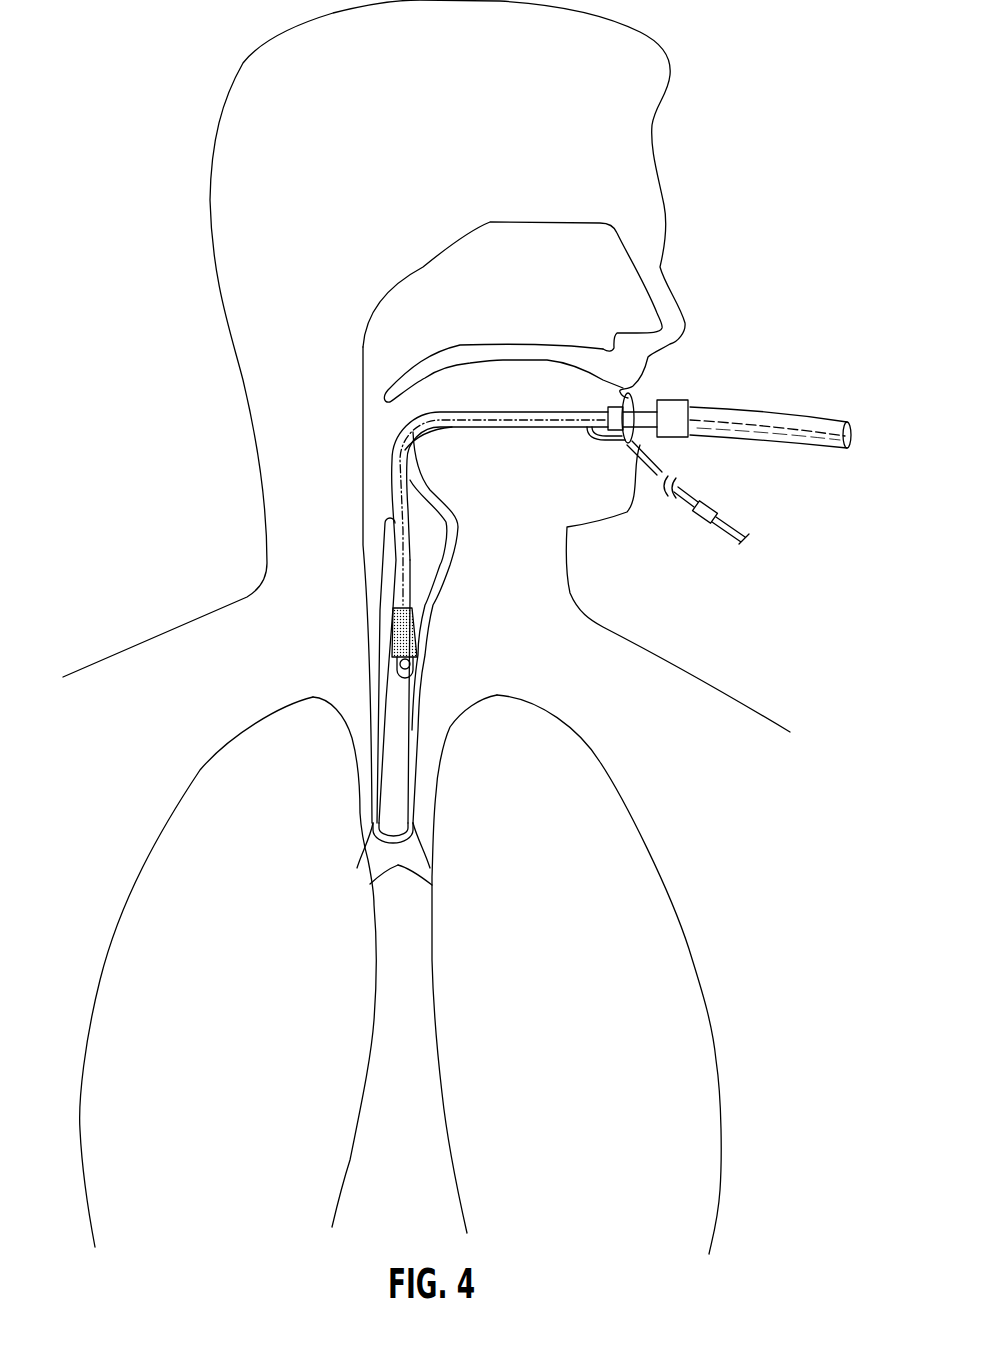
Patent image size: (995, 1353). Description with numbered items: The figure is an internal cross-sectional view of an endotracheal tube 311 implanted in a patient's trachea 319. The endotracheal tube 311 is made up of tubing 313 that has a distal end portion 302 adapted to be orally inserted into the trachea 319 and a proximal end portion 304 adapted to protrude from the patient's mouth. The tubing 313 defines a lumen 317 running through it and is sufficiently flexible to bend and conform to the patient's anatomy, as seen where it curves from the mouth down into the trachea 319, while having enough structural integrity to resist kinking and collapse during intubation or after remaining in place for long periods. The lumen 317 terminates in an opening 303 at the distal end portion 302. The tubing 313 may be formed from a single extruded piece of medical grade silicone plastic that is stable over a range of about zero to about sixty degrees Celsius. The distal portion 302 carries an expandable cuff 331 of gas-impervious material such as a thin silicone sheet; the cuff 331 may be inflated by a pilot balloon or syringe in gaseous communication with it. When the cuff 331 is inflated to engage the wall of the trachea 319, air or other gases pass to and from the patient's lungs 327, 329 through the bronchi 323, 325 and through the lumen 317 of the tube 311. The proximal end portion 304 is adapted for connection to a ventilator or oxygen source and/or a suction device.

The distal end portion 302 is at (411, 565).
The opening 303 is at (423, 663).
The proximal end portion 304 is at (737, 403).
The endotracheal tube 311 is at (455, 440).
The tubing 313 is at (393, 440).
The lumen 317 is at (405, 533).
The trachea 319 is at (427, 632).
The bronchus 323 is at (370, 843).
The bronchus 325 is at (423, 843).
The lung 327 is at (266, 1023).
The lung 329 is at (596, 1023).
The expandable cuff 331 is at (387, 637).